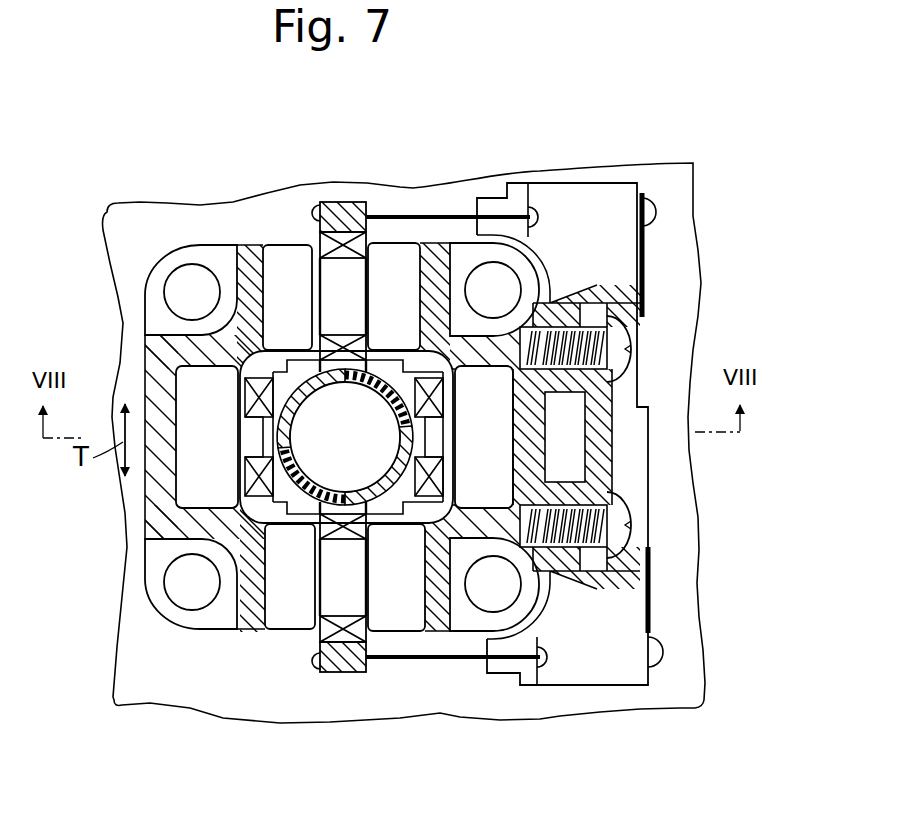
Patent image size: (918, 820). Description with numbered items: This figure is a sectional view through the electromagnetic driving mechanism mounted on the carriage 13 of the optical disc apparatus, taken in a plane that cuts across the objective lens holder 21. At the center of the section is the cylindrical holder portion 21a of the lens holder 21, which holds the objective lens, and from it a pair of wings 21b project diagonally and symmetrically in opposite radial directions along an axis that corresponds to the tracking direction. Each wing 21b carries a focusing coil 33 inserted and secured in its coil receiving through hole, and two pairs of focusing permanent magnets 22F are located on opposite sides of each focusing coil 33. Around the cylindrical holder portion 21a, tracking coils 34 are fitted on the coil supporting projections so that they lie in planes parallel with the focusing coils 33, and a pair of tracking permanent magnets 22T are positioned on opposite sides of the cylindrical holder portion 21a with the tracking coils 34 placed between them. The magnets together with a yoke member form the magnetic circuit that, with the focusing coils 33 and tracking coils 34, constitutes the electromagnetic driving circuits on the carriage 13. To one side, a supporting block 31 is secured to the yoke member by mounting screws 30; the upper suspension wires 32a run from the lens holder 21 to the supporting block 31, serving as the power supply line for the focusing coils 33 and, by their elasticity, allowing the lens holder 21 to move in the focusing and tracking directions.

The carriage 13 is at (698, 641).
The objective lens holder 21 is at (334, 679).
The cylindrical holder portion 21a is at (290, 437).
The wings 21b is at (345, 203).
The focusing permanent magnets 22F is at (280, 250).
The tracking permanent magnets 22T is at (200, 487).
The mounting screws 30 is at (633, 350).
The supporting block 31 is at (600, 237).
The upper suspension wires 32a is at (469, 722).
The focusing coils 33 is at (372, 352).
The tracking coils 34 is at (245, 400).